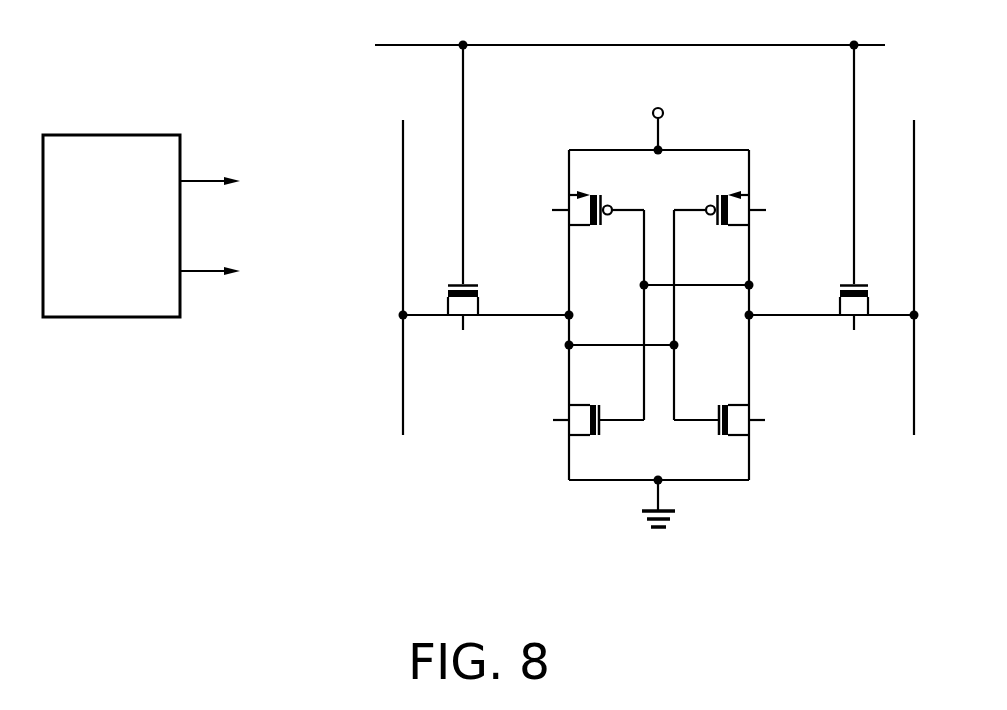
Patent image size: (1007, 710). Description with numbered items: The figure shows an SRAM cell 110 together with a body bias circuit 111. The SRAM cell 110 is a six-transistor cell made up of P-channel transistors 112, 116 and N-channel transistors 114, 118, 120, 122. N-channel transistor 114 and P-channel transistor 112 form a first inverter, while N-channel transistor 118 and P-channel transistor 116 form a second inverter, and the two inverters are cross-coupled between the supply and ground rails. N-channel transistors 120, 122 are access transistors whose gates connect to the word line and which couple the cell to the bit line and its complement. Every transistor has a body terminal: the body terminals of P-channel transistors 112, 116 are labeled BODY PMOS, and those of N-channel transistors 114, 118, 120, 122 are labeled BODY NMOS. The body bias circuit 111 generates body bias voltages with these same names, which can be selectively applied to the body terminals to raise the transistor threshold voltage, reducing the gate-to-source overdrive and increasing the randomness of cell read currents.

The SRAM cell 110 is at (622, 283).
The body bias circuit 111 is at (80, 317).
The P-channel transistor 112 is at (599, 226).
The N-channel transistor 114 is at (597, 405).
The P-channel transistor 116 is at (719, 226).
The N-channel transistor 118 is at (721, 405).
The N-channel transistor 120 is at (451, 284).
The N-channel transistor 122 is at (865, 284).